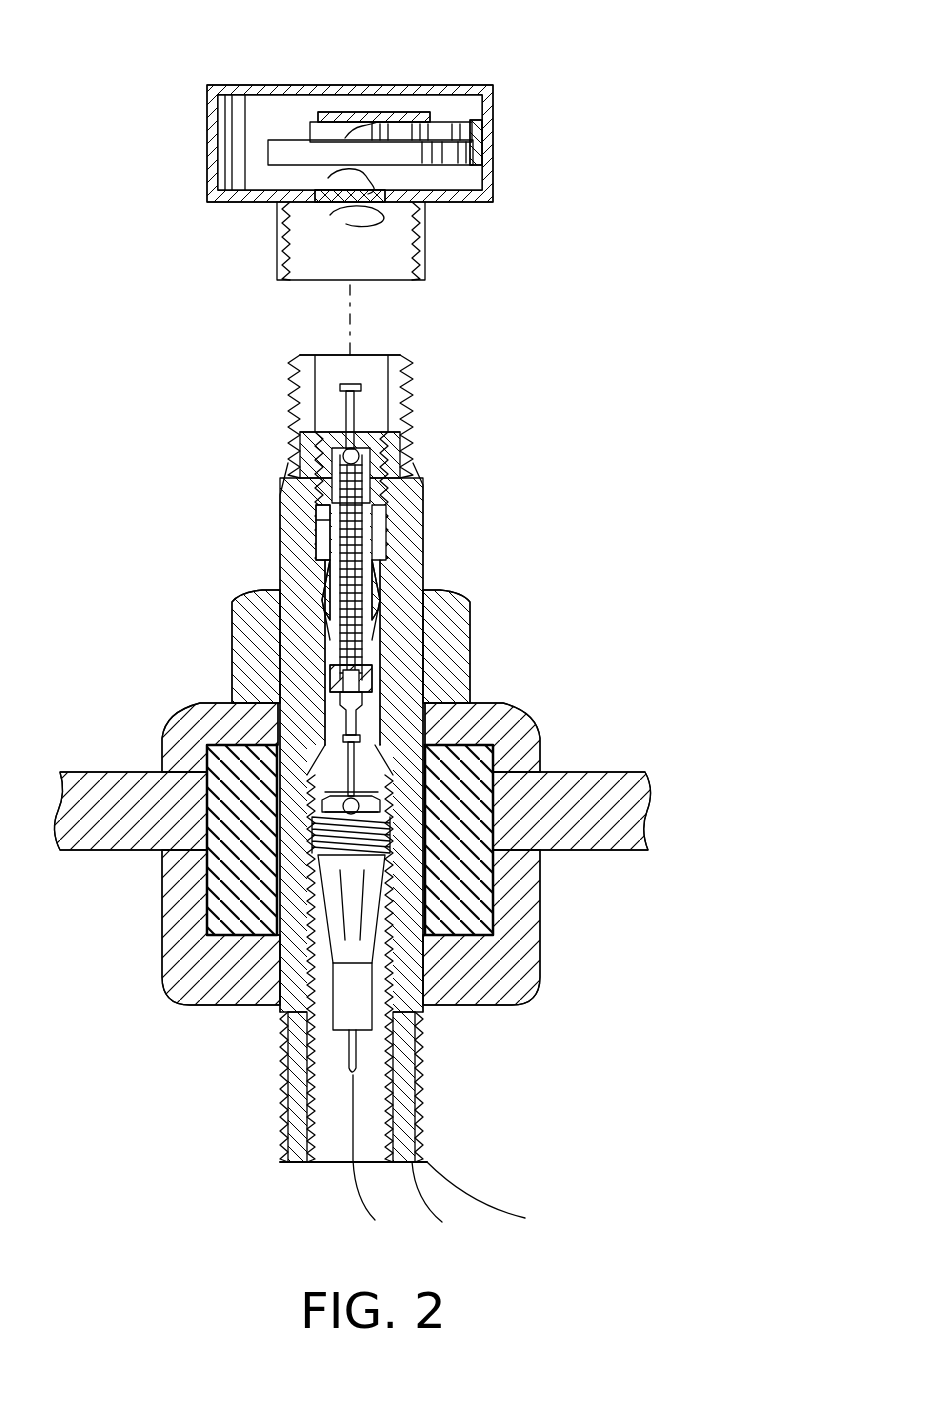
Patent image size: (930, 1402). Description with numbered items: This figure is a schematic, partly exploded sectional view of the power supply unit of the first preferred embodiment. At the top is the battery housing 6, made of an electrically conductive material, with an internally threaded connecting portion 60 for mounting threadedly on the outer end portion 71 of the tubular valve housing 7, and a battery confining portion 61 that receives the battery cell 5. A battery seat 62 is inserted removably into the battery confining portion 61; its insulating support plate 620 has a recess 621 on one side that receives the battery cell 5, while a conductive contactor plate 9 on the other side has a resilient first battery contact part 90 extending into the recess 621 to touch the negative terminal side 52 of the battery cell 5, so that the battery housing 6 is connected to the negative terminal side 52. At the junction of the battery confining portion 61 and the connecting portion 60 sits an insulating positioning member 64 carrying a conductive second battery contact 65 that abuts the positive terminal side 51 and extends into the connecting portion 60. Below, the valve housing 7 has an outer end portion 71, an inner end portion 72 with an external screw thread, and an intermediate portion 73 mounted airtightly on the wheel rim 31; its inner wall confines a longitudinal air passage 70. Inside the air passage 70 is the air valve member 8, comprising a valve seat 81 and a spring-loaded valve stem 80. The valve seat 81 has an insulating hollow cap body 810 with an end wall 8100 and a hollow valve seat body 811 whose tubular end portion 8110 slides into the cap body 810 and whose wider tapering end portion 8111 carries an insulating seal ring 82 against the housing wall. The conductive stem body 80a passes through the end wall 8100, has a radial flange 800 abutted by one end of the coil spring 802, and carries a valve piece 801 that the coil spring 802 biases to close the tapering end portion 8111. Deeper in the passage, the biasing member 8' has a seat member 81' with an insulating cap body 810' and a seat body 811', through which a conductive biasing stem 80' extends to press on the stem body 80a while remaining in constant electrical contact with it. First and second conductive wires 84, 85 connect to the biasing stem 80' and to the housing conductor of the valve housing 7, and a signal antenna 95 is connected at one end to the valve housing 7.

The battery housing 6 is at (254, 82).
The battery confining portion 61 is at (282, 113).
The connecting portion 60 is at (425, 252).
The recess 621 is at (493, 100).
The battery seat 62 is at (443, 114).
The support plate 620 is at (465, 125).
The contactor plate 9 is at (345, 110).
The first battery contact part 90 is at (370, 120).
The battery cell 5 is at (264, 150).
The negative terminal side 52 is at (262, 122).
The positive terminal side 51 is at (262, 178).
The positioning member 64 is at (387, 179).
The second battery contact 65 is at (395, 238).
The valve housing 7 is at (291, 400).
The air passage 70 is at (325, 375).
The outer end portion 71 is at (300, 413).
The intermediate portion 73 is at (297, 862).
The wheel rim 31 is at (600, 780).
The inner end portion 72 is at (275, 1077).
The valve stem 80 is at (407, 447).
The stem body 80a is at (355, 408).
The end wall 8100 is at (362, 440).
The radial flange 800 is at (385, 465).
The coil spring 802 is at (385, 482).
The air valve member 8 is at (455, 567).
The seal ring 82 is at (385, 562).
The valve piece 801 is at (380, 665).
The biasing member 8' is at (449, 720).
The biasing stem 80' is at (466, 730).
The valve seat 81 is at (243, 604).
The cap body 810 is at (241, 508).
The tubular end portion 8110 is at (315, 520).
The valve seat body 811 is at (241, 569).
The tapering end portion 8111 is at (345, 585).
The cap body 810' is at (491, 878).
The seat body 811' is at (494, 963).
The seat member 81' is at (529, 895).
The first conductive wire 84 is at (368, 1220).
The second conductive wire 85 is at (440, 1222).
The signal antenna 95 is at (470, 1190).